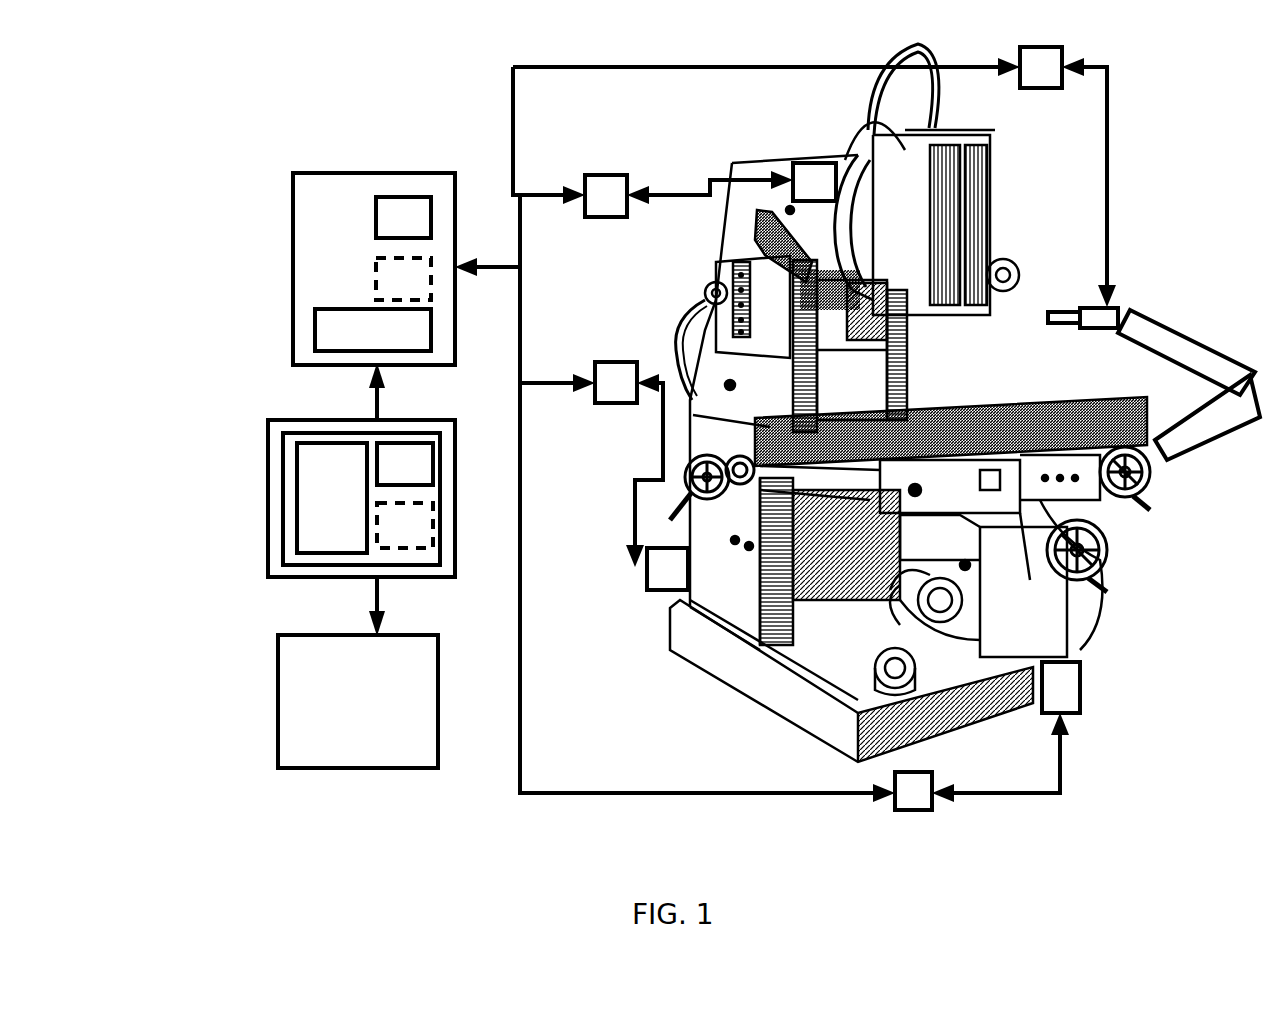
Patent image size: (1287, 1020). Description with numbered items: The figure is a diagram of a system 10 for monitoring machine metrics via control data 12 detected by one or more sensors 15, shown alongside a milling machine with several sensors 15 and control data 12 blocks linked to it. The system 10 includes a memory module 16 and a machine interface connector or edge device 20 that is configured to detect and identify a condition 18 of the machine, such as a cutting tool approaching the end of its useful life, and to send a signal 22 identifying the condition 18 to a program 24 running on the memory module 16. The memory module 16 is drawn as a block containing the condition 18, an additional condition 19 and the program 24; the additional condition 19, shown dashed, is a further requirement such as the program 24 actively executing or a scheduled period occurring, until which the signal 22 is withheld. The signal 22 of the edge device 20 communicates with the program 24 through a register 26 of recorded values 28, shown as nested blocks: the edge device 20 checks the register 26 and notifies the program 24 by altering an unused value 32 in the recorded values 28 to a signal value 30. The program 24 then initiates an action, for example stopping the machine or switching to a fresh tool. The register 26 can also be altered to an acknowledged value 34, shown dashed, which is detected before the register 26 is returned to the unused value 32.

The system 10 is at (98, 143).
The control data 12 is at (620, 178).
The sensors 15 is at (828, 163).
The memory module 16 is at (293, 187).
The condition 18 is at (417, 228).
The additional condition 19 is at (417, 290).
The edge device 20 is at (283, 636).
The signal 22 is at (375, 388).
The program 24 is at (386, 341).
The register 26 is at (268, 492).
The recorded values 28 is at (283, 435).
The signal value 30 is at (418, 474).
The unused value 32 is at (345, 498).
The acknowledged value 34 is at (418, 536).